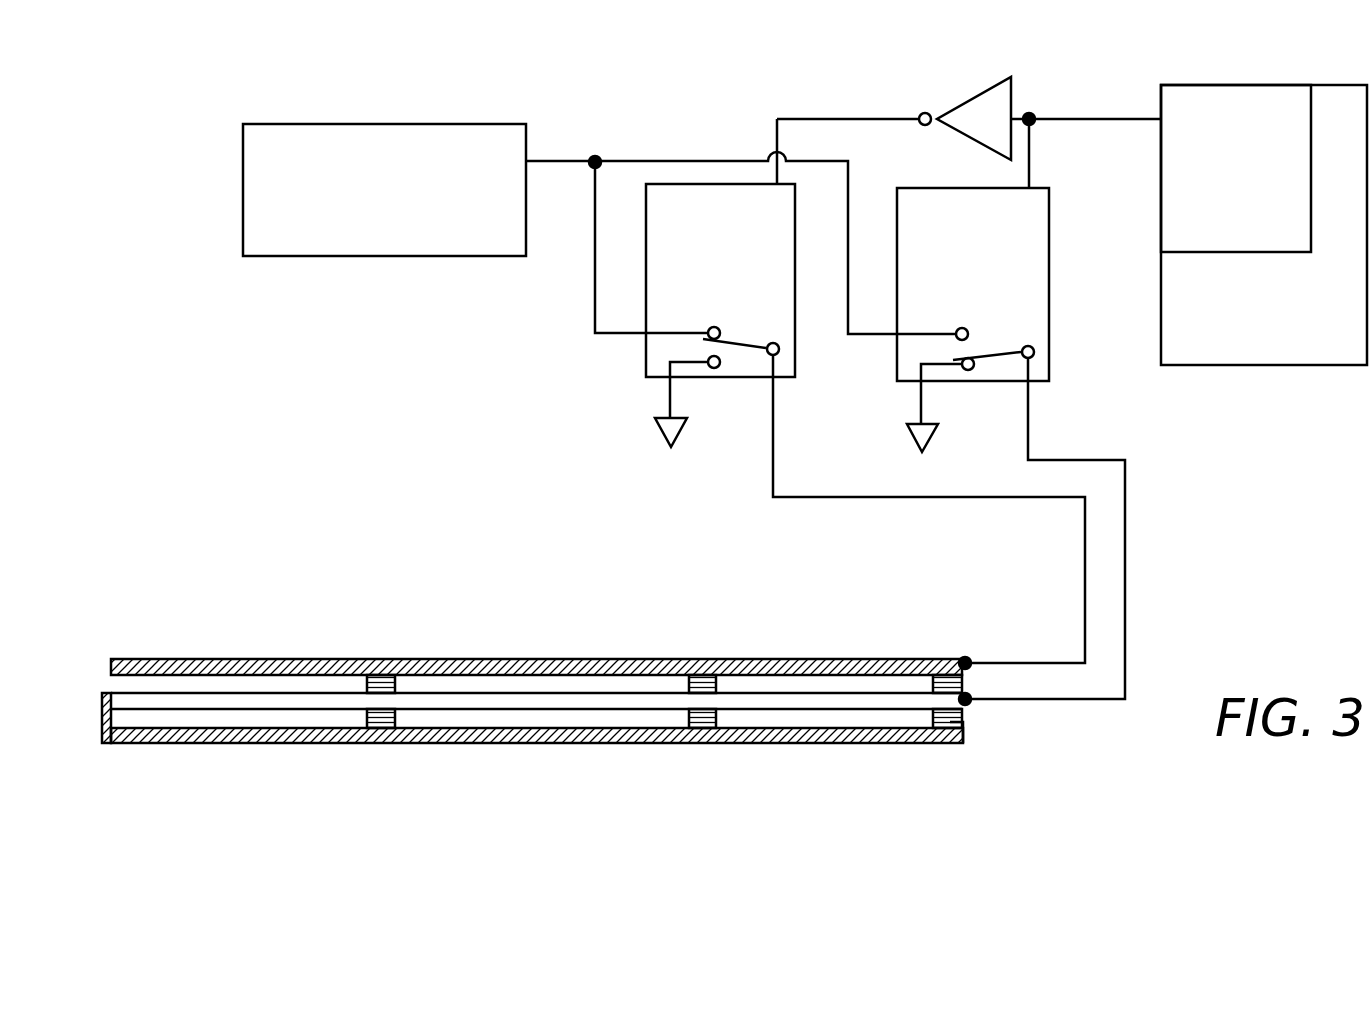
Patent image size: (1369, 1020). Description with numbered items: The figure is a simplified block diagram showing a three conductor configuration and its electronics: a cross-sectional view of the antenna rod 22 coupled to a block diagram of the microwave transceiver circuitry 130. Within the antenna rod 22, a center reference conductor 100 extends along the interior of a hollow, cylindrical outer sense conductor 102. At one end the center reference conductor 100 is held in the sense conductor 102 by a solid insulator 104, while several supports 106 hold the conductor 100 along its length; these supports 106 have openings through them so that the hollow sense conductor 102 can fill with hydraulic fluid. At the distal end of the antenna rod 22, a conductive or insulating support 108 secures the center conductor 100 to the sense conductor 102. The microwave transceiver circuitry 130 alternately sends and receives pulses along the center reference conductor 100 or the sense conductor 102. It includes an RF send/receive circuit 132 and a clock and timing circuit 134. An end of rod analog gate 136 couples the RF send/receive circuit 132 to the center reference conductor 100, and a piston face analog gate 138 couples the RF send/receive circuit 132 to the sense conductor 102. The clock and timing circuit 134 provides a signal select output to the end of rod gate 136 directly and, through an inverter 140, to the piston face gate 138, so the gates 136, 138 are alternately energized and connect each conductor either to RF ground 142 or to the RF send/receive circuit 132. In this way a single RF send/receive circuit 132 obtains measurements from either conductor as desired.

The antenna rod 22 is at (190, 786).
The center reference conductor 100 is at (346, 677).
The outer sense conductor 102 is at (243, 745).
The solid insulator 104 is at (953, 722).
The supports 106 is at (435, 660).
The support 108 is at (100, 735).
The microwave transceiver circuitry 130 is at (346, 326).
The RF send/receive circuit 132 is at (393, 256).
The clock and timing circuit 134 is at (1330, 85).
The end of rod analog gate 136 is at (1049, 334).
The piston face analog gate 138 is at (646, 353).
The inverter 140 is at (958, 100).
The RF ground 142 is at (678, 432).